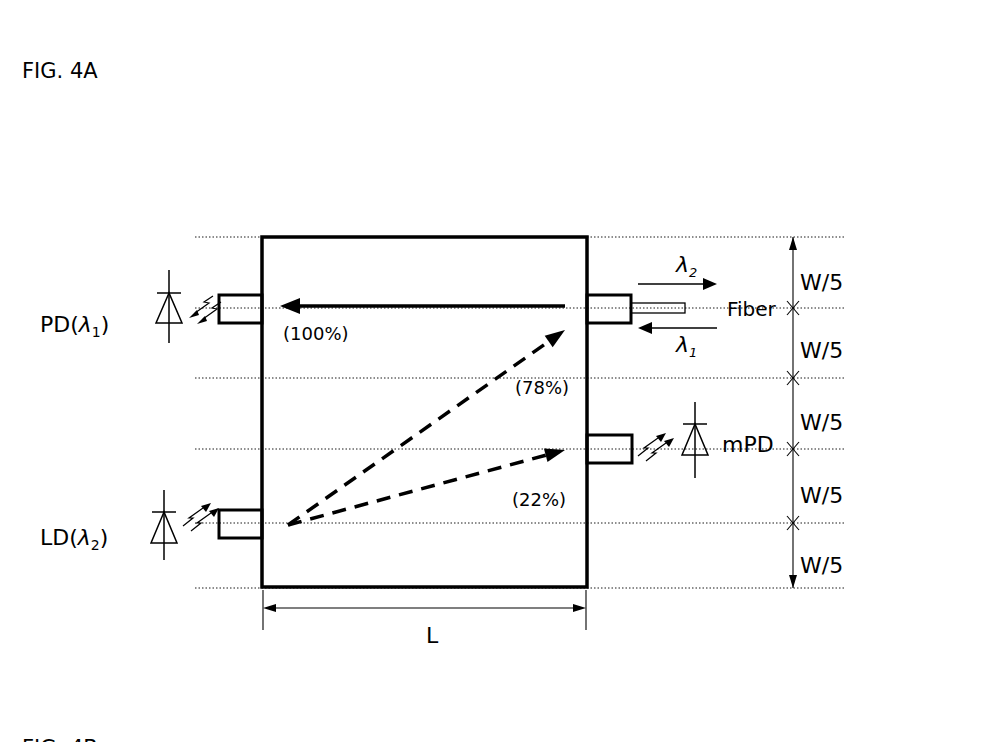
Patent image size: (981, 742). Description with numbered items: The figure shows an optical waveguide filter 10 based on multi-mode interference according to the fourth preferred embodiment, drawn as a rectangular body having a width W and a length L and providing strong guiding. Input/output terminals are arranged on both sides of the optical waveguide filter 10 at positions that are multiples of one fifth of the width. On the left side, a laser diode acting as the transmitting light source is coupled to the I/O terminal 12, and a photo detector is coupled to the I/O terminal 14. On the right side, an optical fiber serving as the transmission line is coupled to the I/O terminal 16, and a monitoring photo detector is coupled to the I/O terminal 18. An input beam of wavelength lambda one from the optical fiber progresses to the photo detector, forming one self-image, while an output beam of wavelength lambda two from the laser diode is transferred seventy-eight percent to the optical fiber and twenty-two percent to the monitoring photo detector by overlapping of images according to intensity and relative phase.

The optical waveguide filter 10 is at (468, 190).
The I/O terminal 12 is at (237, 533).
The I/O terminal 14 is at (240, 298).
The I/O terminal 16 is at (611, 298).
The I/O terminal 18 is at (612, 458).